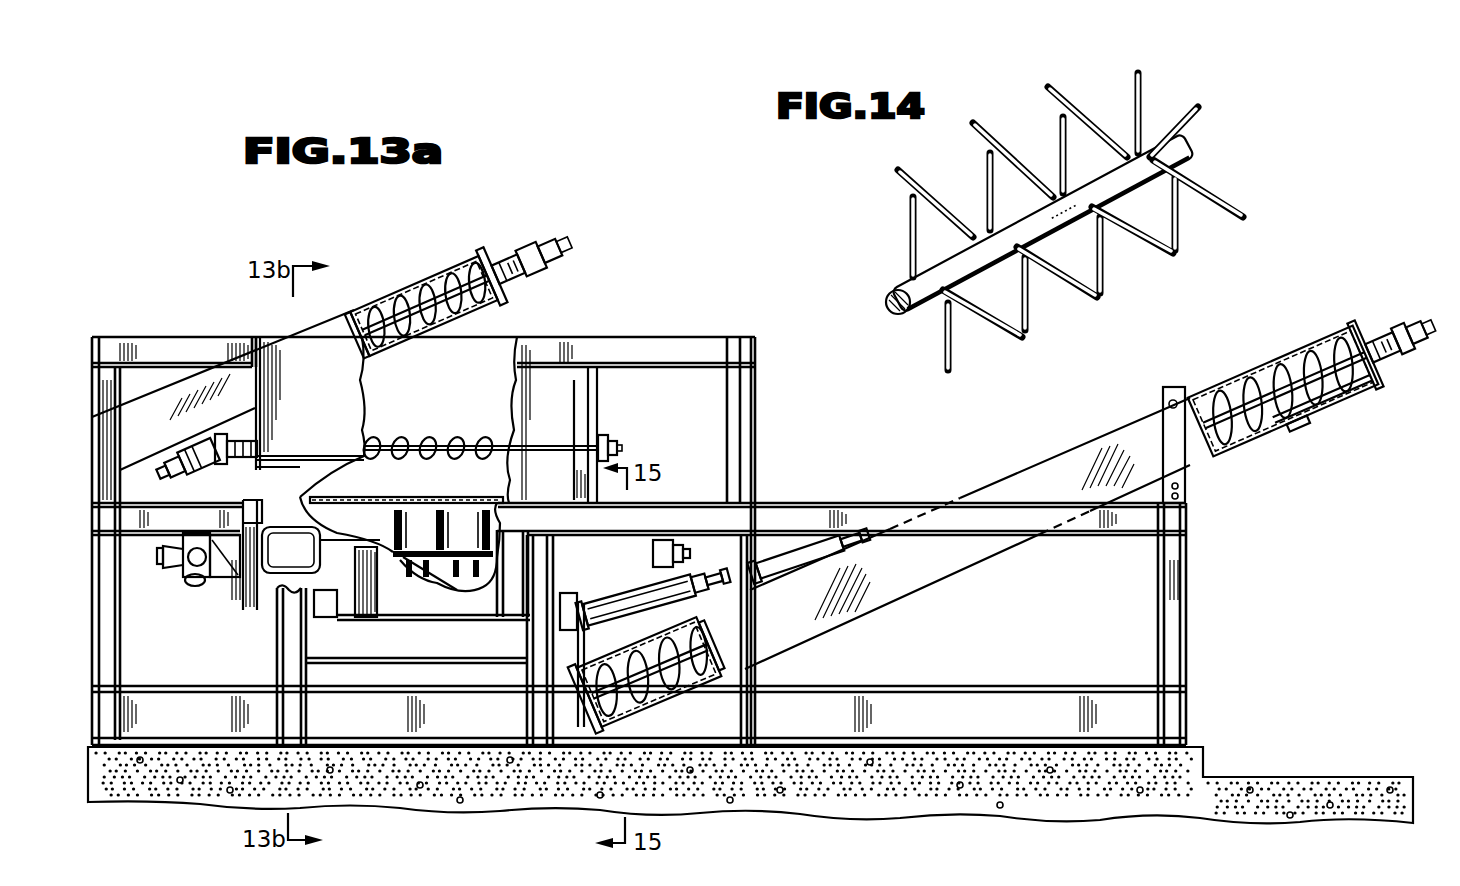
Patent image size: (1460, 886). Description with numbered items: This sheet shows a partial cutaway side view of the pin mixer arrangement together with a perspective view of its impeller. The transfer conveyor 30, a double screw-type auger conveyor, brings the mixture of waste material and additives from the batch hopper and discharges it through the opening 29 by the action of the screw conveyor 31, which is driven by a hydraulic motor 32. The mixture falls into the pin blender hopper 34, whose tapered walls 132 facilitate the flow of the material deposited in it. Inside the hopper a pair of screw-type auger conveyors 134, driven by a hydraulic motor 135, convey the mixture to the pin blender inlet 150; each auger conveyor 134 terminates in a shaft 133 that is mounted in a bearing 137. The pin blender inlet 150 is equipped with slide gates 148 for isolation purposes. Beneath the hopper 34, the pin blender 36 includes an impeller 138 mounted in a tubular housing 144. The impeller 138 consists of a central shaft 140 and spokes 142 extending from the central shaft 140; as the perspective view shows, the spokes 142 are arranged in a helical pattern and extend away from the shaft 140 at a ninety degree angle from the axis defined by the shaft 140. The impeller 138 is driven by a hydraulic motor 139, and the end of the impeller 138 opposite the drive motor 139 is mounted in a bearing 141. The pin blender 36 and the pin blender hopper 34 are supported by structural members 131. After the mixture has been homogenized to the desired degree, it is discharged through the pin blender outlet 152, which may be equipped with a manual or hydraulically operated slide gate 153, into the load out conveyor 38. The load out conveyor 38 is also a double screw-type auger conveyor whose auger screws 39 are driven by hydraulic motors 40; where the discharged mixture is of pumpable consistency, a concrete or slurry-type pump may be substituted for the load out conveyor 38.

In FIG. 13A, the opening 29 is at (482, 327).
In FIG. 13A, the transfer conveyor 30 is at (464, 262).
In FIG. 13A, the screw conveyor 31 is at (418, 280).
In FIG. 13A, the hydraulic motor 32 is at (545, 245).
In FIG. 13A, the pin blender hopper 34 is at (588, 387).
In FIG. 13A, the pin blender 36 is at (256, 626).
In FIG. 13A, the load out conveyor 38 is at (973, 558).
In FIG. 13A, the auger screws 39 is at (1323, 392).
In FIG. 13A, the hydraulic motor 40 is at (1403, 356).
In FIG. 13A, the structural members 131 is at (306, 716).
In FIG. 13A, the tapered walls 132 is at (600, 395).
In FIG. 13A, the shaft 133 is at (622, 450).
In FIG. 13A, the screw-type auger conveyors 134 is at (539, 421).
In FIG. 13A, the hydraulic motor 135 is at (224, 466).
In FIG. 13A, the bearing 137 is at (617, 435).
In FIG. 13A, the pin blender impeller 138 is at (433, 560).
In FIG. 14, the pin blender impeller 138 is at (1078, 215).
In FIG. 13A, the hydraulic motor 139 is at (187, 574).
In FIG. 13A, the central shaft 140 is at (391, 560).
In FIG. 14, the central shaft 140 is at (890, 306).
In FIG. 13A, the bearing 141 is at (740, 503).
In FIG. 13A, the spokes 142 is at (440, 509).
In FIG. 14, the spokes 142 is at (1072, 107).
In FIG. 13A, the tubular housing 144 is at (507, 588).
In FIG. 13A, the slide gates 148 is at (272, 563).
In FIG. 13A, the pin blender inlet 150 is at (313, 494).
In FIG. 13A, the pin blender outlet 152 is at (607, 603).
In FIG. 13A, the slide gate 153 is at (660, 538).